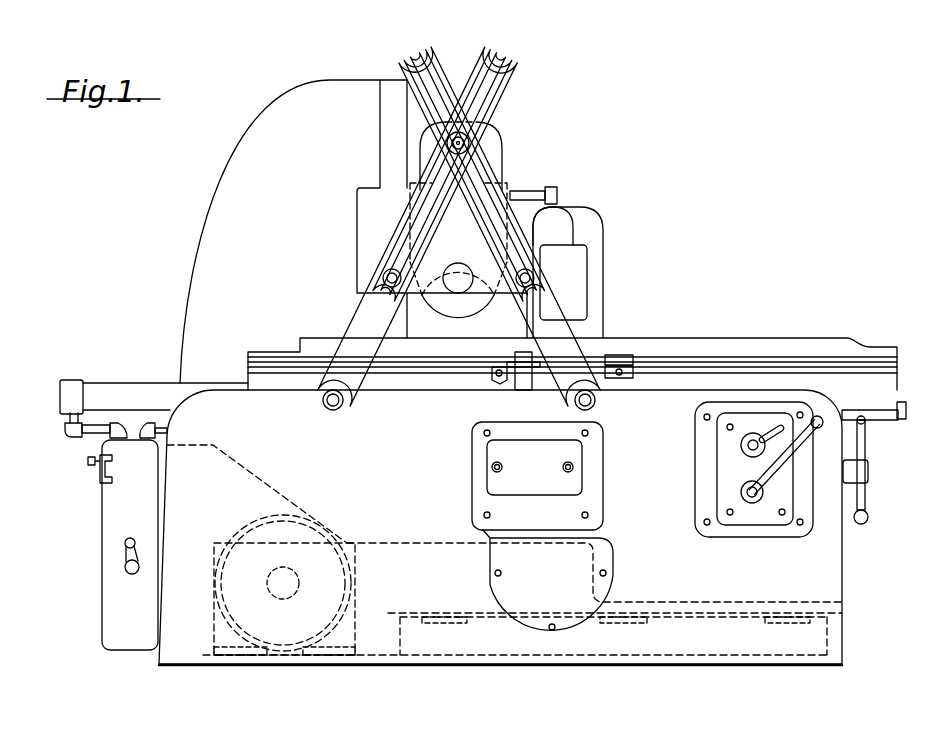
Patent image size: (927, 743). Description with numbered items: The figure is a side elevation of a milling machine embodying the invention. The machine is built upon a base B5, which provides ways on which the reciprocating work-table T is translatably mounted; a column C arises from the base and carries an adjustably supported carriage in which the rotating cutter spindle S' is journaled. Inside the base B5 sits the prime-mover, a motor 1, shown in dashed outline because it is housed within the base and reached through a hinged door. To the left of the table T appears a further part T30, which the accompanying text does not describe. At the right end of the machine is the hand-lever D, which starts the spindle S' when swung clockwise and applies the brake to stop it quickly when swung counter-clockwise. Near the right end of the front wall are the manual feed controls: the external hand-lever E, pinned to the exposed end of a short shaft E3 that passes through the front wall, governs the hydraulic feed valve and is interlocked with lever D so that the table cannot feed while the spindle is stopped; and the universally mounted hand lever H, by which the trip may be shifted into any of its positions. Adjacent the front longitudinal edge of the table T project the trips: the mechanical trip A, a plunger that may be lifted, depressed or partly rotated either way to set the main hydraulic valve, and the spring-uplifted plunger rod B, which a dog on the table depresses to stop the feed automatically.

The column C is at (353, 231).
The cutter spindle S' is at (458, 277).
The extension table T30 is at (138, 392).
The work-table T is at (777, 341).
The plunger rod B is at (482, 384).
The mechanical trip A is at (522, 382).
The base B5 is at (257, 494).
The motor 1 is at (223, 550).
The hand lever H is at (745, 447).
The hand-lever E is at (777, 460).
The short shaft E3 is at (750, 501).
The hand-lever D is at (866, 445).